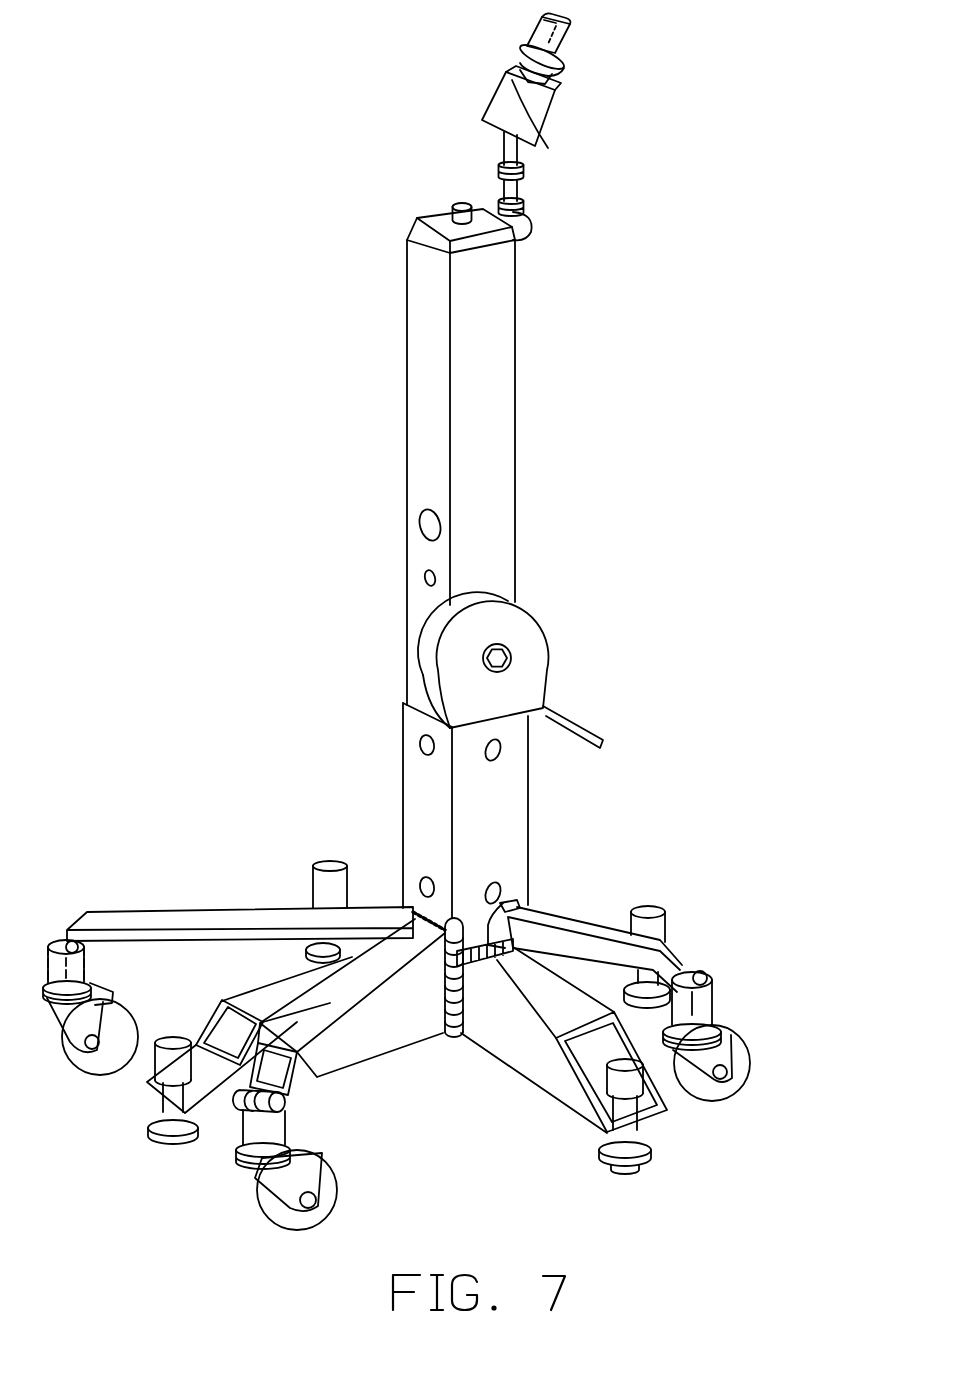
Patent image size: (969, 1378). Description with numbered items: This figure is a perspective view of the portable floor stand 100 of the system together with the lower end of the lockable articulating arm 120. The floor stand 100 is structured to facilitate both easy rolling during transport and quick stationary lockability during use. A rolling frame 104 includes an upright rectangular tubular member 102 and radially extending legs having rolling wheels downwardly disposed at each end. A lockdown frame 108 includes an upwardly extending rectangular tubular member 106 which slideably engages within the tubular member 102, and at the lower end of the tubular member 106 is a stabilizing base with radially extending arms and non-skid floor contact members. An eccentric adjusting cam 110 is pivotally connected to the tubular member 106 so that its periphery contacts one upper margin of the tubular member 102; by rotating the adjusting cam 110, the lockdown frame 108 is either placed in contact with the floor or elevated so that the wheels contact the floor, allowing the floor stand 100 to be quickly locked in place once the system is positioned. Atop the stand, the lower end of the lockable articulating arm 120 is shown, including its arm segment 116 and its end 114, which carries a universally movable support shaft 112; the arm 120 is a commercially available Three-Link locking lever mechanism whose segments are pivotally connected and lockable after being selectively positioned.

The portable floor stand 100 is at (530, 545).
The upright rectangular tubular member 102 is at (530, 843).
The rolling frame 104 is at (238, 892).
The upwardly extending rectangular tubular member 106 is at (518, 442).
The lockdown frame 108 is at (434, 1052).
The eccentric adjusting cam 110 is at (548, 632).
The universally movable support shaft 112 is at (522, 190).
The arm end 114 is at (548, 127).
The arm segment 116 is at (570, 46).
The lockable articulating arm 120 is at (528, 31).